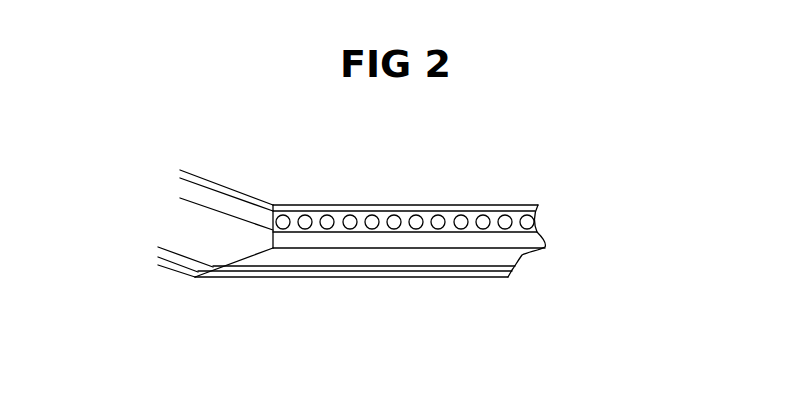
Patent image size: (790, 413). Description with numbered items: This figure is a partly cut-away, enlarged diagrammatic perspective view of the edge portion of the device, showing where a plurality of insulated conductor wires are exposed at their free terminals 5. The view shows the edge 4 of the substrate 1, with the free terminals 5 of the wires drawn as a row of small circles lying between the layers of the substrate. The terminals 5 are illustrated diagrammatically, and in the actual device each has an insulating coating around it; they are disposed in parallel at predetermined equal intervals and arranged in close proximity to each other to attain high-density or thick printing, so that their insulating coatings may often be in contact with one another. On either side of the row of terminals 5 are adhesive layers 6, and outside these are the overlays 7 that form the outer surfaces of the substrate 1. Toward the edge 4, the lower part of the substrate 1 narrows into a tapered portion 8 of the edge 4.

The substrate 1 is at (185, 230).
The edge 4 is at (460, 240).
The free terminals 5 is at (507, 220).
The adhesive layers 6 is at (195, 263).
The overlays 7 is at (172, 265).
The tapered portion 8 is at (257, 252).